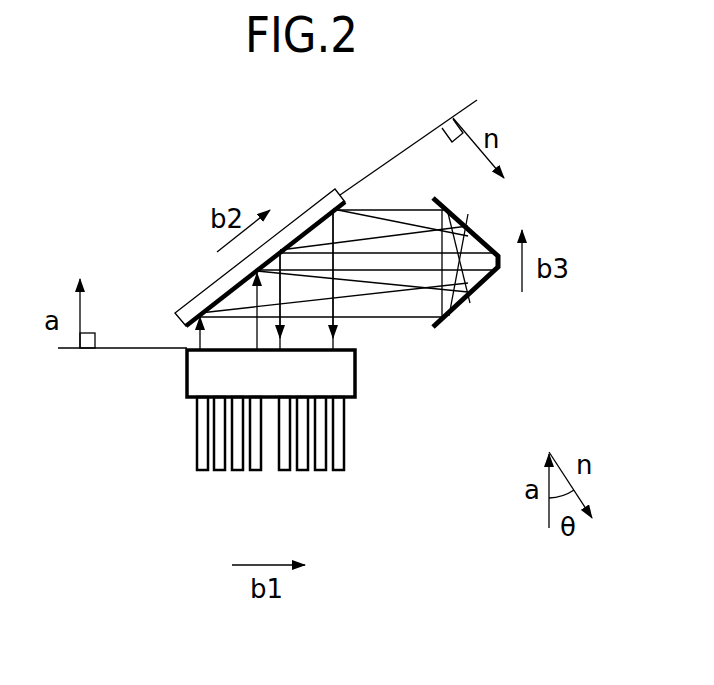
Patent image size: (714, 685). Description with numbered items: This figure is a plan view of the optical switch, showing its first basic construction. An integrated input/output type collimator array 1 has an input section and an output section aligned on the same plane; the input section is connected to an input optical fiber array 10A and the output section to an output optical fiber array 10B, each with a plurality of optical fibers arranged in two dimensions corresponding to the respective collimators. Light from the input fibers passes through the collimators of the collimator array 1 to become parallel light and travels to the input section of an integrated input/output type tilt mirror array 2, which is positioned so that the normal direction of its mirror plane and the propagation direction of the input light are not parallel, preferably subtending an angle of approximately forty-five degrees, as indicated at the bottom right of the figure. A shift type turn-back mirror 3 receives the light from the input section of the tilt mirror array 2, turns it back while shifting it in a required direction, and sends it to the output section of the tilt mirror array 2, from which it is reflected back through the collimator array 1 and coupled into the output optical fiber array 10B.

The collimator array 1 is at (228, 447).
The tilt mirror array 2 is at (318, 200).
The shift type turn-back mirror 3 is at (468, 312).
The input optical fiber array 10A is at (262, 483).
The output optical fiber array 10B is at (349, 483).